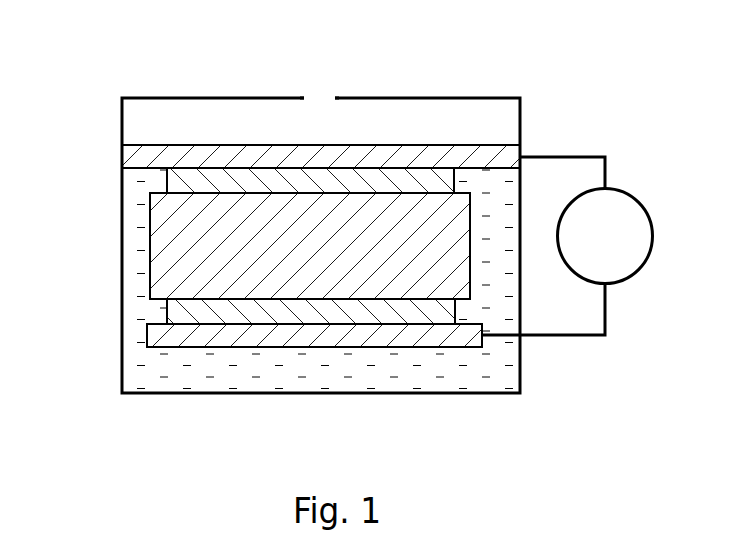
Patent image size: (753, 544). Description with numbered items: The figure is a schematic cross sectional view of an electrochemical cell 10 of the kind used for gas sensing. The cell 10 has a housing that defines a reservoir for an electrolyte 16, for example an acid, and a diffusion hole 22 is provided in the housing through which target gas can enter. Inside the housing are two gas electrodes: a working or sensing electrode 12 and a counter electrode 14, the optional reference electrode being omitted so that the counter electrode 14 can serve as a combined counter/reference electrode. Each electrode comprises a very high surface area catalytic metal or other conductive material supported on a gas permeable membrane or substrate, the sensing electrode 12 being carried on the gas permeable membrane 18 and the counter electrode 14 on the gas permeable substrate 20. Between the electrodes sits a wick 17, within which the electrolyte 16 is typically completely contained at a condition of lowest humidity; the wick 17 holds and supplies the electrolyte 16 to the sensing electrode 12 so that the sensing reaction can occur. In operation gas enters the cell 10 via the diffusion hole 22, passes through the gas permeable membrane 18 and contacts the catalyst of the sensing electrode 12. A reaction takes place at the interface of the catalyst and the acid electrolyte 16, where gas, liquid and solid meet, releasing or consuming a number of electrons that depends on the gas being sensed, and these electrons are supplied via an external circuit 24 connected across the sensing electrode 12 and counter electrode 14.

The cell 10 is at (172, 88).
The diffusion hole 22 is at (324, 95).
The electrolyte 16 is at (473, 380).
The gas permeable membrane 18 is at (122, 152).
The sensing electrode 12 is at (165, 178).
The wick 17 is at (173, 257).
The counter electrode 14 is at (178, 313).
The gas permeable substrate 20 is at (155, 336).
The external circuit 24 is at (630, 193).